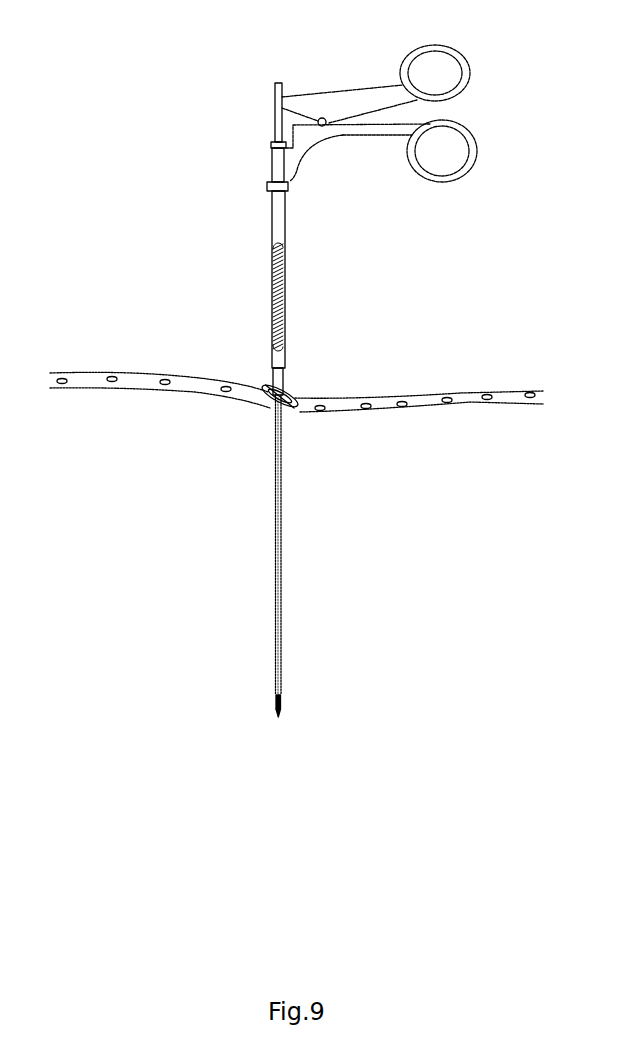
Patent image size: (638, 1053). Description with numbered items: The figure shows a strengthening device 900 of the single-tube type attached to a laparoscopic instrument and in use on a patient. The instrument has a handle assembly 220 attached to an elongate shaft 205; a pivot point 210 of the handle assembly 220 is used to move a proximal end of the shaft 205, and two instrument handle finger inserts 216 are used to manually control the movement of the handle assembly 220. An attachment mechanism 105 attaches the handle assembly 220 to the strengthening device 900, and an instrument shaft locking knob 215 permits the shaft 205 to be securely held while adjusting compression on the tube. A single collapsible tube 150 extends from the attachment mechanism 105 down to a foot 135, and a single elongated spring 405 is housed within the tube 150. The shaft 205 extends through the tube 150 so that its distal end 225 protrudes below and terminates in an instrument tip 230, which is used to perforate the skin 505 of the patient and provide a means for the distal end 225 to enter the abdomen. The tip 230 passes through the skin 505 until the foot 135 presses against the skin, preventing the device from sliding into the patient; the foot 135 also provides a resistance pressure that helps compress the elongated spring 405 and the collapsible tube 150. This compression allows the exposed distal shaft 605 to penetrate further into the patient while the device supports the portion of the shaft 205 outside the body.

The needle insertion system 900 is at (218, 59).
The elongate shaft 205 is at (276, 117).
The instrument shaft locking knob 215 is at (270, 145).
The attachment mechanism 105 is at (266, 186).
The collapsible tube 150 is at (271, 228).
The foot 135 is at (268, 386).
The pivot point 210 is at (322, 118).
The instrument handle finger inserts 216 is at (440, 157).
The handle assembly 220 is at (357, 137).
The elongated spring 405 is at (293, 195).
The skin 505 is at (423, 397).
The distal end 225 is at (275, 570).
The instrument tip 230 is at (273, 708).
The exposed distal shaft 605 is at (283, 695).